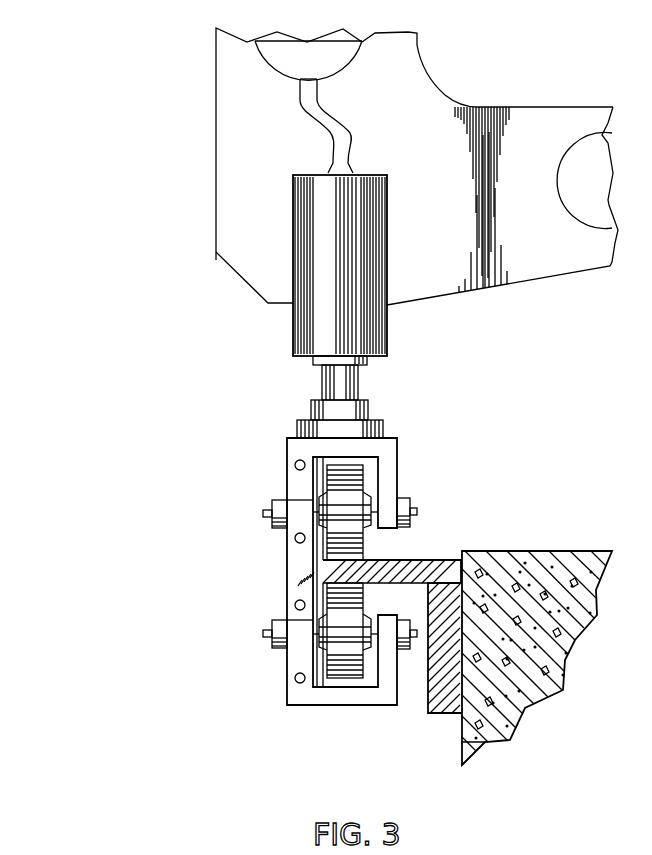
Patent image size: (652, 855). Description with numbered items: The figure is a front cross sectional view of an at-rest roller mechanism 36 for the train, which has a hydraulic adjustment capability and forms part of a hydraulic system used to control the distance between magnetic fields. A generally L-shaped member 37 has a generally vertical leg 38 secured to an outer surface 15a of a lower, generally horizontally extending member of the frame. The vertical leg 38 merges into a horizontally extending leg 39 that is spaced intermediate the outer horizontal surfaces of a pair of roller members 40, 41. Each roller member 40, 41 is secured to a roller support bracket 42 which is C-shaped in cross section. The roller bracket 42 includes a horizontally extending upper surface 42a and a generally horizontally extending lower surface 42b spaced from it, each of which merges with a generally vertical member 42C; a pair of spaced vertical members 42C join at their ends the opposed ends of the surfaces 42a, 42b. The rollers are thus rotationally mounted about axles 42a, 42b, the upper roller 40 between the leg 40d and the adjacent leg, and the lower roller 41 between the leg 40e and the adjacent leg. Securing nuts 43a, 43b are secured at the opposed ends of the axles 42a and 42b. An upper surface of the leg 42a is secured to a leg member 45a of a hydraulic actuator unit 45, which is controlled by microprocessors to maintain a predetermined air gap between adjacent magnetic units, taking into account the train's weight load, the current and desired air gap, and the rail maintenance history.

The outer surface 15a is at (462, 750).
The at-rest roller mechanism 36 is at (173, 603).
The L-shaped member 37 is at (455, 545).
The vertical leg 38 is at (447, 713).
The horizontally extending leg 39 is at (415, 558).
The roller member 40 is at (347, 509).
The leg 40d is at (397, 470).
The leg 40e is at (404, 684).
The roller member 41 is at (335, 688).
The roller support bracket 42 is at (275, 708).
The upper surface / axle 42a is at (262, 514).
The lower surface / axle 42b is at (266, 636).
The vertical member 42C is at (287, 572).
The securing nut 43a is at (274, 500).
The securing nut 43b is at (274, 620).
The hydraulic actuator unit 45 is at (291, 327).
The leg member 45a is at (365, 396).